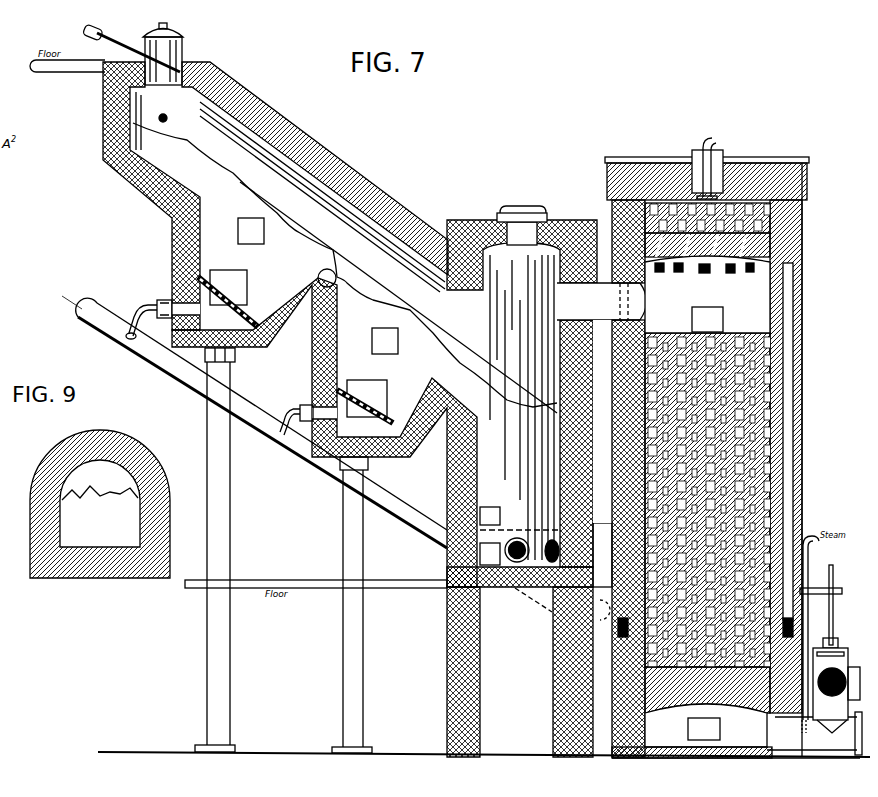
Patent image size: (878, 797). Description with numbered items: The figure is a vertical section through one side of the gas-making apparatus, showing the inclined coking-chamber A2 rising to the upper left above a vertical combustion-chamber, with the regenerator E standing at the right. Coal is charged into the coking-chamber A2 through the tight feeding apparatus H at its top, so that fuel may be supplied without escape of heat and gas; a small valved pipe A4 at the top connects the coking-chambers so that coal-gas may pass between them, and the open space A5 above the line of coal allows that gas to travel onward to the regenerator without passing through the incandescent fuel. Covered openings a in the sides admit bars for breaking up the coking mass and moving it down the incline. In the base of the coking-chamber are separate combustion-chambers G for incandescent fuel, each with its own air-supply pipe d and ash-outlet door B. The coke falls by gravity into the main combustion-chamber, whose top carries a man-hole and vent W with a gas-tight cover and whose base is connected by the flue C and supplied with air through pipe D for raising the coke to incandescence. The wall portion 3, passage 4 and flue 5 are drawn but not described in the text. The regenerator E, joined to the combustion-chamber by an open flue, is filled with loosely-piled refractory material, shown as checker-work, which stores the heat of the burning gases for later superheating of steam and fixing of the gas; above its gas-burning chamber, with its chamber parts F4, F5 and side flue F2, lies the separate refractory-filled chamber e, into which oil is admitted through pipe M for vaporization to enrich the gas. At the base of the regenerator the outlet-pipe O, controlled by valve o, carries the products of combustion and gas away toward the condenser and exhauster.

In FIG. 7, the hopper wall 3 is at (108, 106).
In FIG. 7, the coking-chamber A2 is at (335, 155).
In FIG. 9, the coking-chamber A2 is at (150, 456).
In FIG. 7, the tight feeding apparatus H is at (182, 48).
In FIG. 7, the valved pipe connecting the tops of the coking-chambers A4 is at (167, 119).
In FIG. 7, the open space above the coal A5 is at (345, 268).
In FIG. 9, the open space above the coal A5 is at (100, 491).
In FIG. 7, the separate combustion-chamber G is at (239, 428).
In FIG. 7, the opening a is at (318, 286).
In FIG. 7, the door B is at (378, 417).
In FIG. 7, the air-supply pipe d is at (150, 304).
In FIG. 7, the air pipe D is at (337, 441).
In FIG. 7, the man-hole and vent W is at (518, 214).
In FIG. 7, the flue C is at (517, 588).
In FIG. 7, the air passage 4 is at (402, 212).
In FIG. 7, the flue 5 is at (588, 416).
In FIG. 7, the regenerator E is at (770, 376).
In FIG. 7, the oil pipe M is at (701, 142).
In FIG. 7, the separate chamber filled with refractory material e is at (770, 209).
In FIG. 7, the combustion chamber F4 is at (707, 294).
In FIG. 7, the nozzle openings F5 is at (751, 273).
In FIG. 7, the side flue F2 is at (793, 285).
In FIG. 7, the valve o is at (838, 642).
In FIG. 7, the outlet-pipe O is at (851, 694).